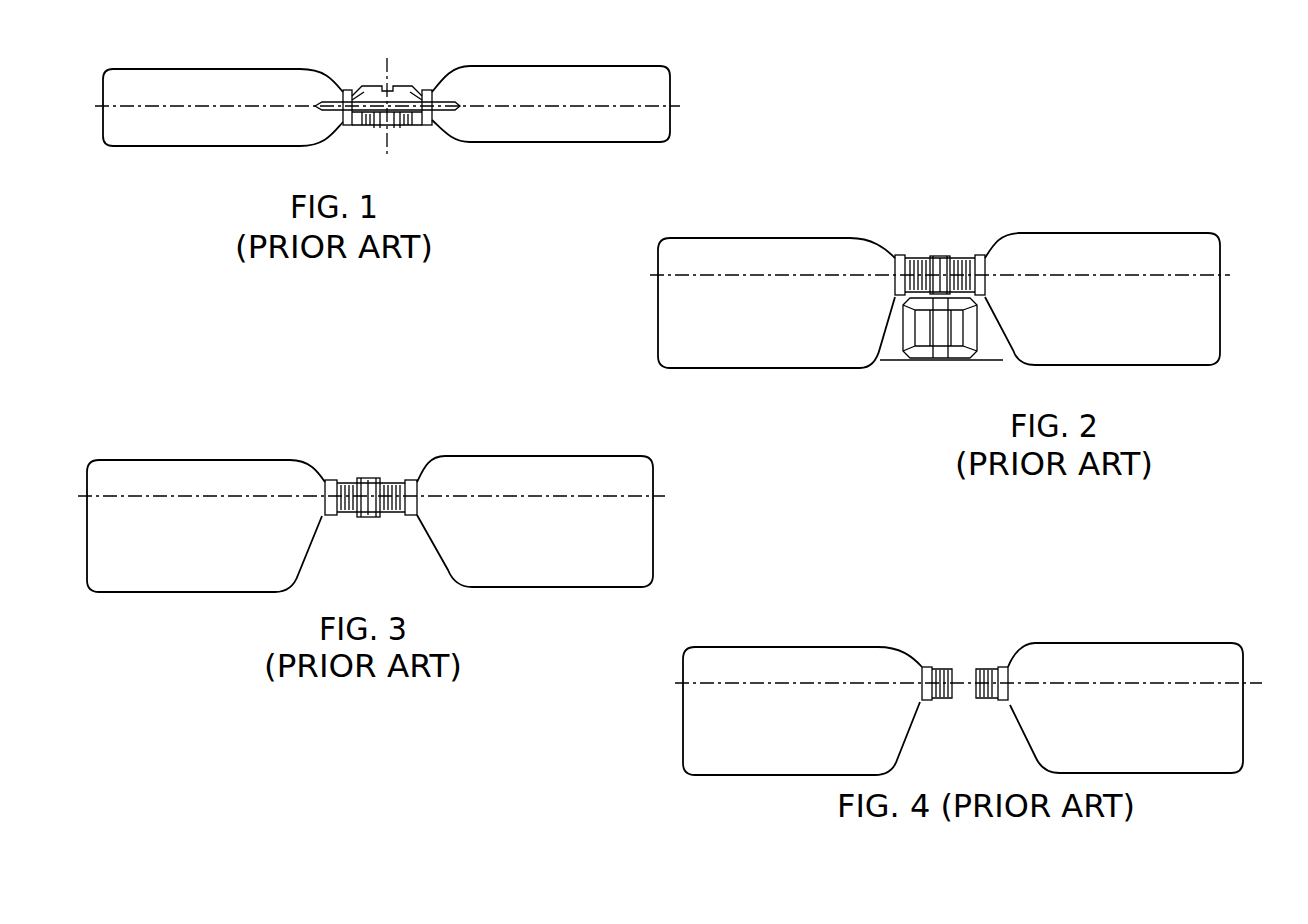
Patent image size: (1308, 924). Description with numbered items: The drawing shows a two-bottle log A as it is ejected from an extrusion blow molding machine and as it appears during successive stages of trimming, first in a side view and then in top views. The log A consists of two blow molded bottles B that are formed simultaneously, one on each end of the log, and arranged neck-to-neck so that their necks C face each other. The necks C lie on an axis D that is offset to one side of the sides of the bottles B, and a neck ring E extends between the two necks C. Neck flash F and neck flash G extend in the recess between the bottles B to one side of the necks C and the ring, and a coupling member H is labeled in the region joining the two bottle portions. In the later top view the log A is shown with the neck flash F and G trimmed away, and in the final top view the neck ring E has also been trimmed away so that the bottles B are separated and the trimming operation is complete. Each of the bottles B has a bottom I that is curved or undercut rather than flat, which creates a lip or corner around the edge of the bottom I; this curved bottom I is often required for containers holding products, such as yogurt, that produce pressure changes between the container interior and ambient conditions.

In FIG. 1, the two-bottle log A is at (85, 82).
In FIG. 2, the two-bottle log A is at (1240, 243).
In FIG. 3, the two-bottle log A is at (70, 475).
In FIG. 4, the two-bottle log A is at (1262, 652).
In FIG. 1, the bottles B is at (205, 148).
In FIG. 2, the bottles B is at (790, 368).
In FIG. 3, the bottles B is at (218, 592).
In FIG. 4, the bottles B is at (800, 647).
In FIG. 2, the necks C is at (908, 258).
In FIG. 4, the necks C is at (933, 667).
In FIG. 1, the axis D is at (140, 110).
In FIG. 2, the axis D is at (812, 268).
In FIG. 3, the axis D is at (240, 495).
In FIG. 4, the axis D is at (838, 682).
In FIG. 1, the neck ring E is at (405, 127).
In FIG. 2, the neck ring E is at (937, 260).
In FIG. 3, the neck ring E is at (368, 480).
In FIG. 1, the neck flash F is at (378, 88).
In FIG. 2, the neck flash F is at (940, 360).
In FIG. 2, the neck flash G is at (943, 258).
In FIG. 3, the coupling member H is at (360, 516).
In FIG. 1, the bottom I is at (103, 118).
In FIG. 2, the bottom I is at (658, 330).
In FIG. 3, the bottom I is at (87, 552).
In FIG. 4, the bottom I is at (683, 735).